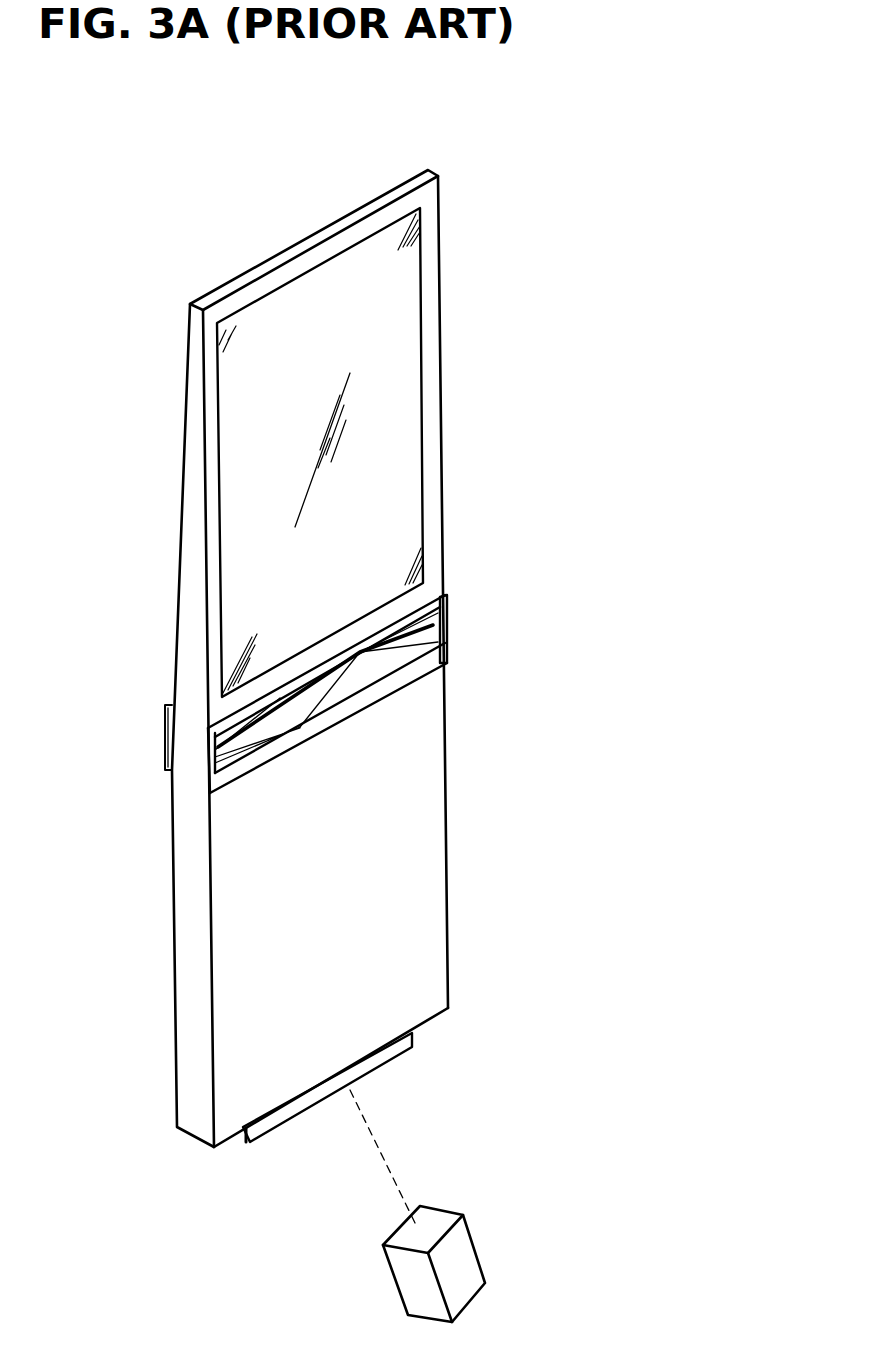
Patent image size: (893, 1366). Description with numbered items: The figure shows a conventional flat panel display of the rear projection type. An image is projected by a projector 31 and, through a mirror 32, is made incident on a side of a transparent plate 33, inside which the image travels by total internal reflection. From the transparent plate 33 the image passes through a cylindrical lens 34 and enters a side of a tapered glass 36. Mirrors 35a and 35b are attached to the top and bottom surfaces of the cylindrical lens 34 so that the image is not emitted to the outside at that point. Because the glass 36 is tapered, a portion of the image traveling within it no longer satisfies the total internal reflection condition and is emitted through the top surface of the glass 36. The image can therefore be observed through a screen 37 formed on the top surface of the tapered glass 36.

The projector 31 is at (480, 1265).
The mirror 32 is at (413, 1045).
The transparent plate 33 is at (187, 1000).
The cylindrical lens 34 is at (383, 655).
The mirror 35a is at (165, 735).
The mirror 35b is at (447, 610).
The tapered glass 36 is at (188, 612).
The screen 37 is at (407, 482).